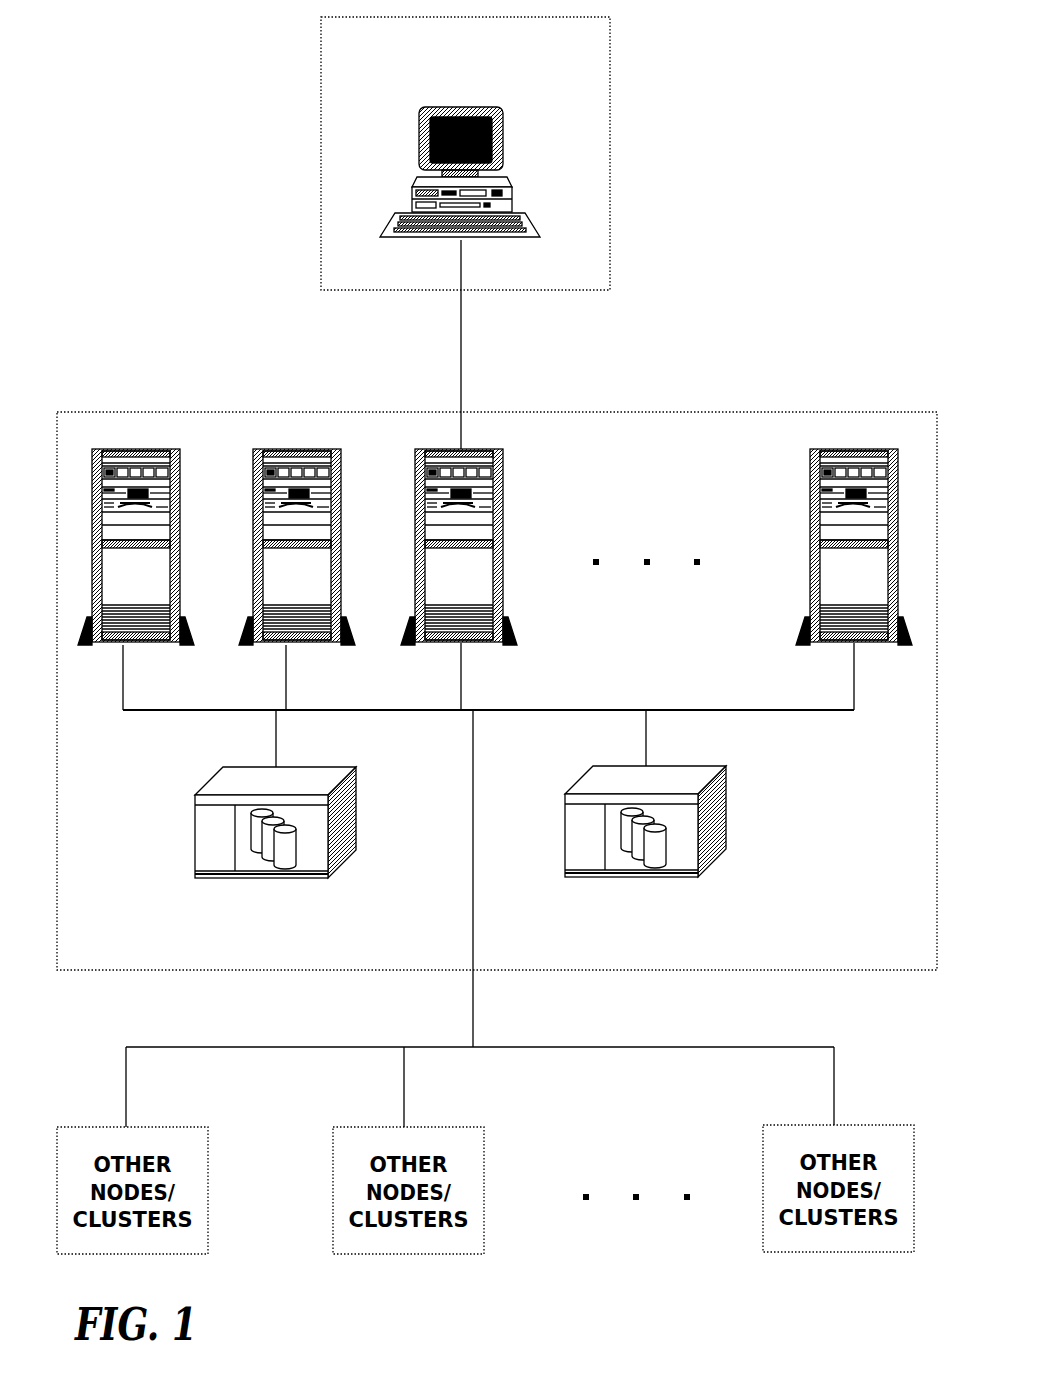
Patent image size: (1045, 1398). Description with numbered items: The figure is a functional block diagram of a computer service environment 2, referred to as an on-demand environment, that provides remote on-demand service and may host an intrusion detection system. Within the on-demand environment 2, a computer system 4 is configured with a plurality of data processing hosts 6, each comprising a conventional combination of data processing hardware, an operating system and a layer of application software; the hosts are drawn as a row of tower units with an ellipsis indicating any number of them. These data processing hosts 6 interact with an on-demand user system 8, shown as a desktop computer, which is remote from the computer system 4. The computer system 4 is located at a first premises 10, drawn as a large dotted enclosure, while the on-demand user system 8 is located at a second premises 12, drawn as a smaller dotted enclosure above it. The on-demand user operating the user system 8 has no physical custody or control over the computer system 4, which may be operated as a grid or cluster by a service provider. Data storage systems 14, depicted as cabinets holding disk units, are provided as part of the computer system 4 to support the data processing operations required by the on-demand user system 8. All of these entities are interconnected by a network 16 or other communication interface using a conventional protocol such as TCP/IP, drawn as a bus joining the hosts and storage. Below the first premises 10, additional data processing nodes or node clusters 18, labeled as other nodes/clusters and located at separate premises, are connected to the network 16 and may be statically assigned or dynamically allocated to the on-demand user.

The computer service environment 2 is at (104, 88).
The computer system 4 is at (165, 772).
The data processing hosts 6 is at (178, 515).
The on-demand user system 8 is at (450, 106).
The first premises 10 is at (680, 412).
The second premises 12 is at (612, 151).
The data storage systems 14 is at (264, 880).
The network 16 is at (578, 709).
The data processing nodes or node clusters 18 is at (212, 1172).